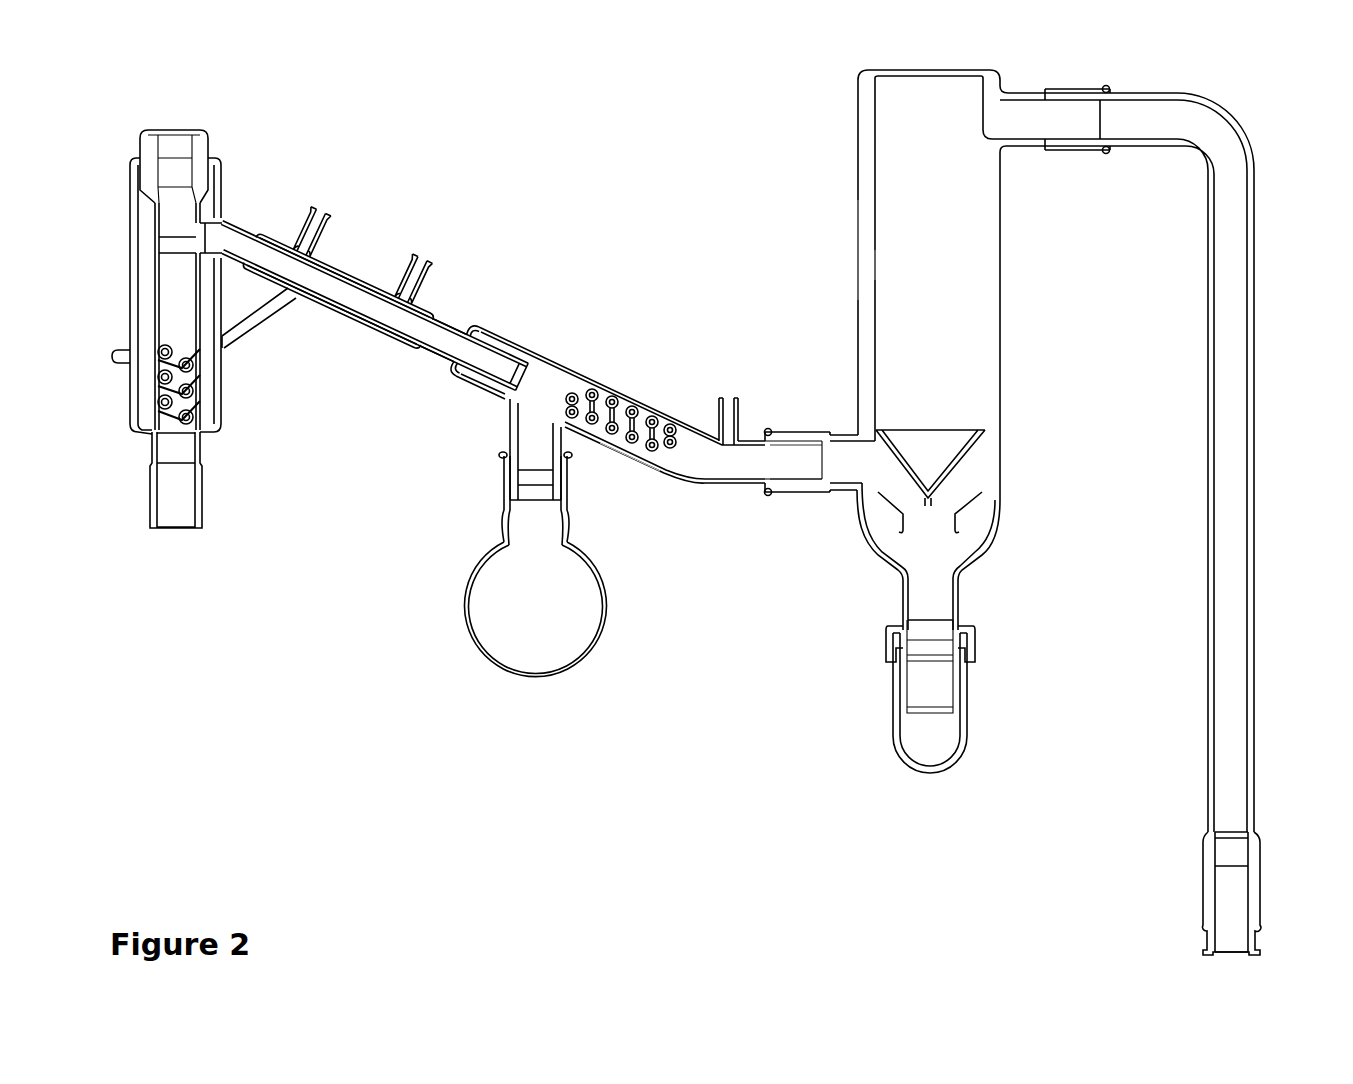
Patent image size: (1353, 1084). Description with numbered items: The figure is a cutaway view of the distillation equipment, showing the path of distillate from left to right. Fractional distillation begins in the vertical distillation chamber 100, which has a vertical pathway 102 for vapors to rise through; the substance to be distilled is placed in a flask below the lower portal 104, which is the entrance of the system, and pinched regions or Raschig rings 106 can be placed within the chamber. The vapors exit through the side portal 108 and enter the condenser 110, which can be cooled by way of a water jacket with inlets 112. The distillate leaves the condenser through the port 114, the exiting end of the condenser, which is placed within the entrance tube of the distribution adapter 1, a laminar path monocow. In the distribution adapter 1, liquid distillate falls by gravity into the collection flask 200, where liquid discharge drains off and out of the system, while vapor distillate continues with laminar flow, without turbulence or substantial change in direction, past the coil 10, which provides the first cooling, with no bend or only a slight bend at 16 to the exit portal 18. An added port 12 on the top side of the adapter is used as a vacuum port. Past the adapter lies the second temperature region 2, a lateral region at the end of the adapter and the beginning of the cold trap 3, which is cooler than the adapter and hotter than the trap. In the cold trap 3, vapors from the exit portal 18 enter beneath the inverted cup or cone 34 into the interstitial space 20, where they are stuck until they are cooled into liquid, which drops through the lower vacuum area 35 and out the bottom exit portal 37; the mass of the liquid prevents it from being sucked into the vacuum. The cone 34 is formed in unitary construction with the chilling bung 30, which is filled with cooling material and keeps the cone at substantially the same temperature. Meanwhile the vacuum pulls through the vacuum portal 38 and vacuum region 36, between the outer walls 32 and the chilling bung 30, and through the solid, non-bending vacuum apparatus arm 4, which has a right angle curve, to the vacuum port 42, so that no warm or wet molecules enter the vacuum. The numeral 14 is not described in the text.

The distribution adapter 1 is at (538, 360).
The second temperature region 2 is at (850, 455).
The cold trap 3 is at (898, 137).
The vacuum apparatus arm 4 is at (1243, 275).
The coil 10 is at (620, 413).
The added port 12 is at (733, 408).
The column wall 14 is at (662, 462).
The slight bend 16 is at (737, 480).
The exit portal 18 is at (790, 485).
The interstitial space 20 is at (877, 478).
The chilling bung 30 is at (893, 265).
The outer walls 32 is at (867, 205).
The inverted cup or cone 34 is at (937, 457).
The lower vacuum area 35 is at (935, 565).
The vacuum region 36 is at (1022, 130).
The bottom exit portal 37 is at (945, 680).
The vacuum portal 38 is at (1072, 100).
The vacuum port 42 is at (1240, 895).
The vertical distillation chamber 100 is at (148, 165).
The vertical pathway 102 is at (165, 285).
The lower portal 104 is at (167, 495).
The Raschig rings 106 is at (160, 388).
The side portal 108 is at (213, 237).
The condenser 110 is at (342, 277).
The inlets 112 is at (408, 278).
The port 114 is at (475, 362).
The collection flask 200 is at (503, 594).